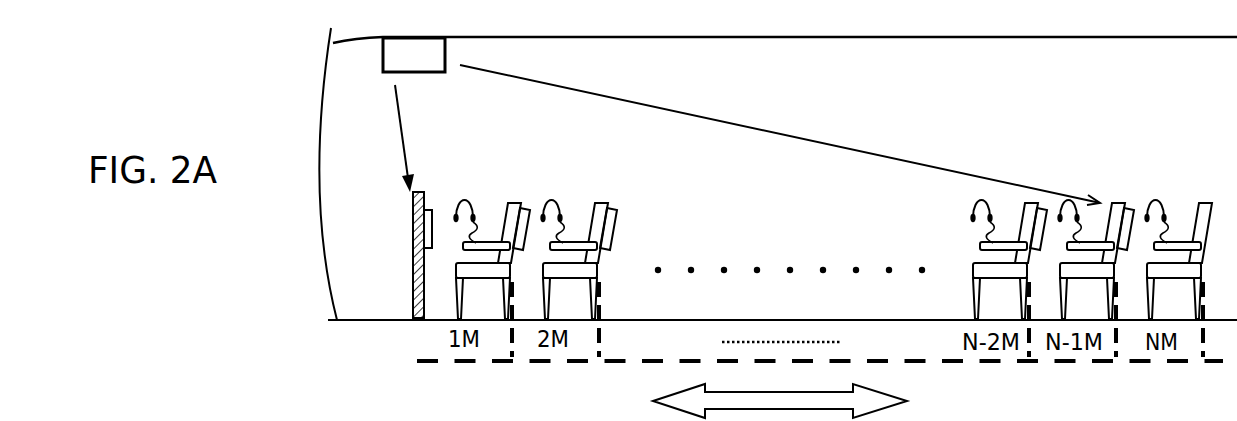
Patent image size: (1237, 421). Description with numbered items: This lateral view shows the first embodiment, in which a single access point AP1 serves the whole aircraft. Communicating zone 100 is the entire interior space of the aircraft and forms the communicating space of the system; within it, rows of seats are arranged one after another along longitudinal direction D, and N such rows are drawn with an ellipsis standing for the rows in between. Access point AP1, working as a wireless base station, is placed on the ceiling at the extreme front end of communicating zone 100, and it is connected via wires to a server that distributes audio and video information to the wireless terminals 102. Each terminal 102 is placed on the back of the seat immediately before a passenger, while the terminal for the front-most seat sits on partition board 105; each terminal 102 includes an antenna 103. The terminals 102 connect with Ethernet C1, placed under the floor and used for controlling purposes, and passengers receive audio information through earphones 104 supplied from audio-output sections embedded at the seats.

The communicating zone 100 is at (1052, 55).
The wireless terminal 102 is at (617, 250).
The antenna 103 is at (529, 213).
The earphones 104 is at (555, 203).
The partition board 105 is at (424, 199).
The access point AP1 is at (741, 121).
The Ethernet C1 is at (465, 362).
The longitudinal direction D is at (780, 392).